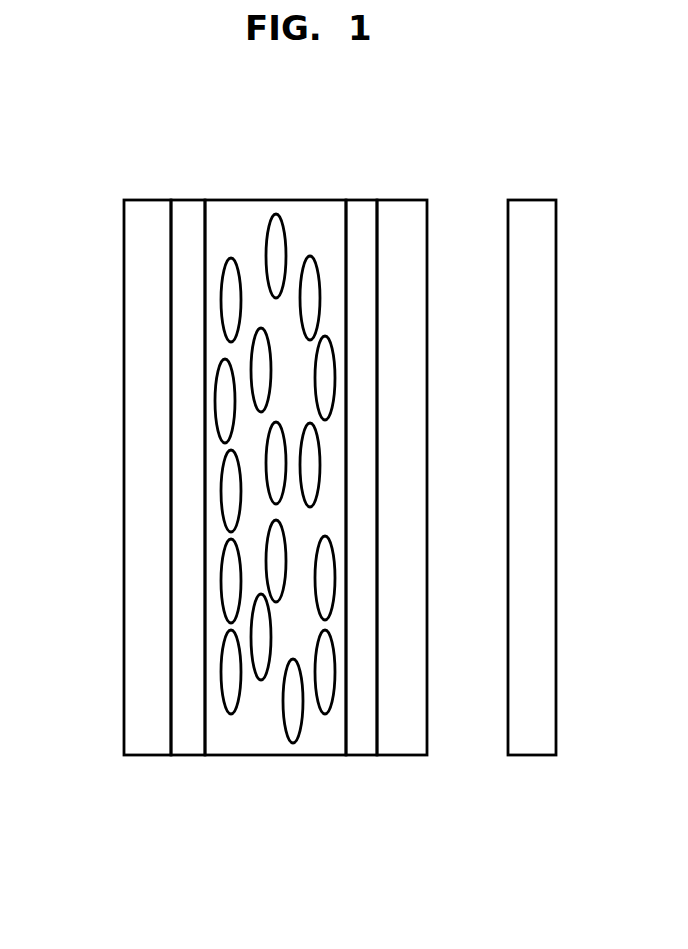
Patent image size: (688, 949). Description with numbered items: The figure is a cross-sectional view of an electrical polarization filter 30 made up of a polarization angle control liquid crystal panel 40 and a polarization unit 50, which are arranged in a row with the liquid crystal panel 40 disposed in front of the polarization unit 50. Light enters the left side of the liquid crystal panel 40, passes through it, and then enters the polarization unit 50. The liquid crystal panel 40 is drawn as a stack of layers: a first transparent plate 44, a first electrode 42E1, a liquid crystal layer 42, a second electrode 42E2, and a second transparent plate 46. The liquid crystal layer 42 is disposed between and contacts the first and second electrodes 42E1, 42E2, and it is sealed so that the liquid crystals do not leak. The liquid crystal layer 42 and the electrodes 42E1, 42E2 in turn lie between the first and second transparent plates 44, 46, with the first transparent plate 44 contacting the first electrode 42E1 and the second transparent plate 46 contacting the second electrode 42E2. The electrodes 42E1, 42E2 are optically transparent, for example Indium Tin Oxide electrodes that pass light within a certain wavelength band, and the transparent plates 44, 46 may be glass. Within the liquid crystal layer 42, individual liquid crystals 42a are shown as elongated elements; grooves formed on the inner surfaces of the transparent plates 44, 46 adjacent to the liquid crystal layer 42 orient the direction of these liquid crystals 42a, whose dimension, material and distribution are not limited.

The electrical polarization filter 30 is at (560, 826).
The polarization angle control liquid crystal panel 40 is at (427, 776).
The first transparent plate 44 is at (142, 218).
The first electrode 42E1 is at (188, 215).
The liquid crystal layer 42 is at (196, 441).
The liquid crystals 42a is at (216, 403).
The second electrode 42E2 is at (360, 215).
The second transparent plate 46 is at (405, 215).
The polarization unit 50 is at (532, 215).